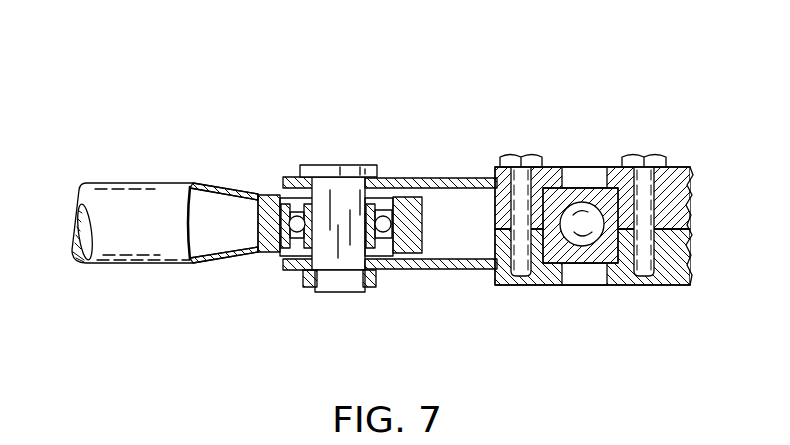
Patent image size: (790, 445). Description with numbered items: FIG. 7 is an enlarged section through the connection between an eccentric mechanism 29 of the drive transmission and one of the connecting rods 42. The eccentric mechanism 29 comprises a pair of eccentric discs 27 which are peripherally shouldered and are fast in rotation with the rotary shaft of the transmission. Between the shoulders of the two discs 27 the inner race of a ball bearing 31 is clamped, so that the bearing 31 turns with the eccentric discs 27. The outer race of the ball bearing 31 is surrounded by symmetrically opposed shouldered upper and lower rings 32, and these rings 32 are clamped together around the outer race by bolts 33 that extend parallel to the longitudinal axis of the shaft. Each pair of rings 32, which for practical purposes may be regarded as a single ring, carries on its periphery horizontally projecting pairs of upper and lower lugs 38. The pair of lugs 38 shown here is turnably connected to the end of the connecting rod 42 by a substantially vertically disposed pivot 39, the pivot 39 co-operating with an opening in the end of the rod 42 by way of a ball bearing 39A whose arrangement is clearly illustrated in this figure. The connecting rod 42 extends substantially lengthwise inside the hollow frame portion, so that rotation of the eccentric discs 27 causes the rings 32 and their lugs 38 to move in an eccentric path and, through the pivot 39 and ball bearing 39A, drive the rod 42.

The connecting rod 42 is at (122, 190).
The pivot 39 is at (355, 164).
The lugs 38 is at (453, 160).
The ball bearing 39A is at (390, 226).
The eccentric mechanism 29 is at (600, 208).
The rings 32 is at (555, 167).
The bolts 33 is at (513, 155).
The ball bearing 31 is at (583, 244).
The eccentric discs 27 is at (675, 178).